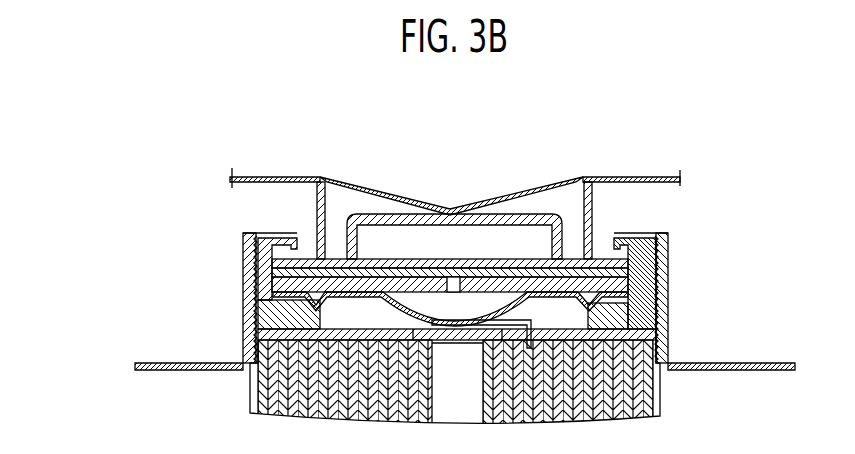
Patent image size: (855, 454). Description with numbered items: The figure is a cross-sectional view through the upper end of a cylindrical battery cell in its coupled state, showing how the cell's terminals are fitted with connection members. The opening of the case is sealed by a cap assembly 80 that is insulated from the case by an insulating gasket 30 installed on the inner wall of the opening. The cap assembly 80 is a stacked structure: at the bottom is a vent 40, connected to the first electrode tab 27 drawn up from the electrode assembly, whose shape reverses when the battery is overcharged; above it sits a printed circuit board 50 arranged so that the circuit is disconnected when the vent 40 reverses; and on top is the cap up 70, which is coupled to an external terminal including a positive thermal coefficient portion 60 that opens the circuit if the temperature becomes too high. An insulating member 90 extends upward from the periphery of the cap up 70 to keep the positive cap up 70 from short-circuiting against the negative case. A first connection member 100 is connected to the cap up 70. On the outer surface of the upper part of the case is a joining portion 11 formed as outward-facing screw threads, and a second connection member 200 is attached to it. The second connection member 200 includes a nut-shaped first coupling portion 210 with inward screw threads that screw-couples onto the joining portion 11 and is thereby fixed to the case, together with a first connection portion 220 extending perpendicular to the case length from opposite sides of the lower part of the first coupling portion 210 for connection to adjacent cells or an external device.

The joining portion 11 is at (660, 272).
The first electrode tab 27 is at (530, 322).
The insulating gasket 30 is at (660, 236).
The vent 40 is at (395, 278).
The printed circuit board 50 is at (498, 285).
The positive thermal coefficient portion 60 is at (572, 258).
The cap up 70 is at (398, 223).
The cap assembly 80 is at (556, 119).
The insulating member 90 is at (315, 203).
The first connection member 100 is at (618, 178).
The second connection member 200 is at (735, 297).
The first coupling portion 210 is at (660, 307).
The first connection portion 220 is at (683, 364).